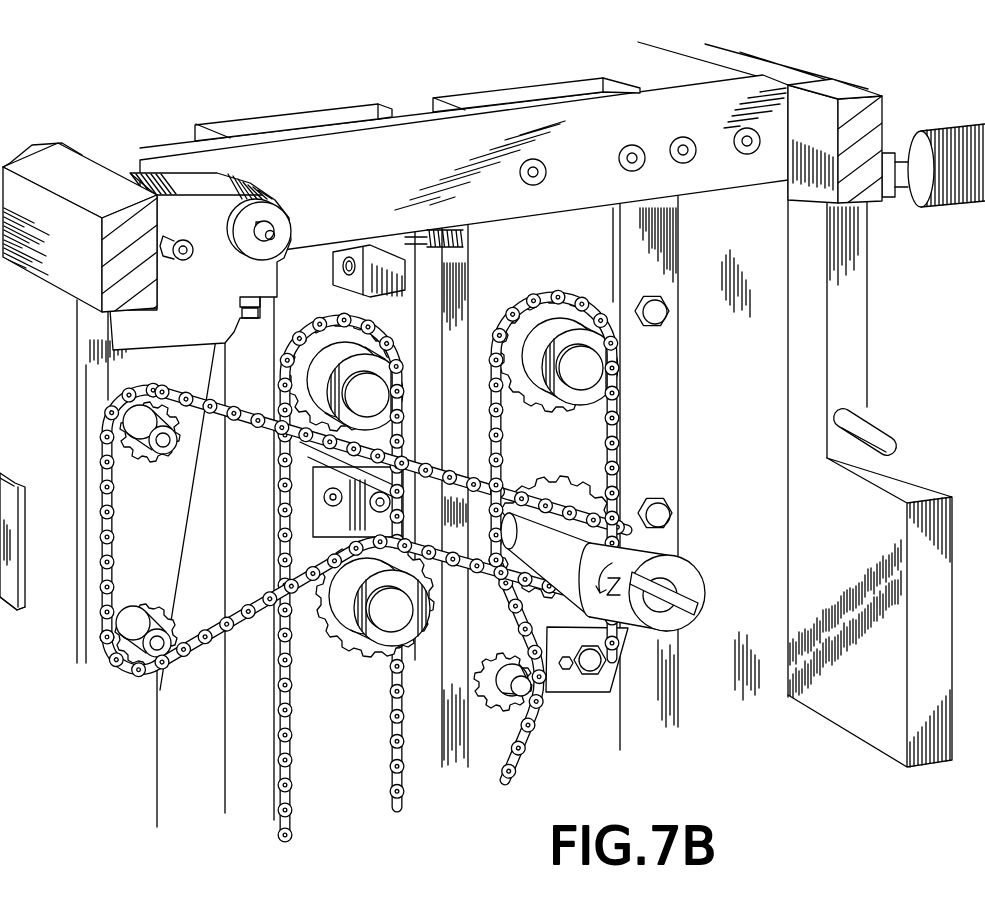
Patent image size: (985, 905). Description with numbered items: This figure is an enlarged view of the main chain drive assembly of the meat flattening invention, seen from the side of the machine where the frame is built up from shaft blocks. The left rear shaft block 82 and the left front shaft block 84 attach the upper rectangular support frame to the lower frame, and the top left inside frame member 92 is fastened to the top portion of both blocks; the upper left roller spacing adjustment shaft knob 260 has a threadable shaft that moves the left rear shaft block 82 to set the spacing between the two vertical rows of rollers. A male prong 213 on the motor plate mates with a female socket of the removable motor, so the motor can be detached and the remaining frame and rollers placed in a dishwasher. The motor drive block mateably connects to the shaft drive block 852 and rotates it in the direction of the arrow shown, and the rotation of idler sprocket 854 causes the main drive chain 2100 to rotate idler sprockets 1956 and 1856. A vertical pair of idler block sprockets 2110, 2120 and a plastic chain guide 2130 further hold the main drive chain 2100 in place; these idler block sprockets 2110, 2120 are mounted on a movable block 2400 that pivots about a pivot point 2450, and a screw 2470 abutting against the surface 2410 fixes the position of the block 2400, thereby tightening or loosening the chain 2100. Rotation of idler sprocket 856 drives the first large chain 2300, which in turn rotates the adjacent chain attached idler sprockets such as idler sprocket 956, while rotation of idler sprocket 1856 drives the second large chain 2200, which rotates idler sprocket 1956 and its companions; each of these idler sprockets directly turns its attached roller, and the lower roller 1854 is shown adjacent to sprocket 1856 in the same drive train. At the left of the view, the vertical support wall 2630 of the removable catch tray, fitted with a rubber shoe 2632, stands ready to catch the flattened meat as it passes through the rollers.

The left rear shaft block 82 is at (293, 118).
The top left inside frame member 92 is at (430, 140).
The left front shaft block 84 is at (537, 92).
The upper left roller spacing adjustment shaft knob 260 is at (962, 208).
The prong 213 is at (873, 430).
The movable block 2400 is at (113, 333).
The surface 2410 is at (250, 263).
The pivot point 2450 is at (181, 262).
The screw 2470 is at (240, 320).
The idler sprocket 1956 is at (398, 387).
The idler sprocket 956 is at (615, 362).
The second large chain 2200 is at (390, 760).
The first large chain 2300 is at (523, 757).
The lower roller 1854 is at (375, 648).
The idler sprocket 1856 is at (388, 645).
The idler sprocket 856 is at (545, 473).
The idler sprocket 854 is at (620, 512).
The shaft drive block 852 is at (694, 580).
The main drive chain 2100 is at (107, 463).
The idler block sprocket 2110 is at (152, 458).
The idler block sprocket 2120 is at (120, 667).
The plastic chain guide 2130 is at (313, 503).
The vertical support wall 2630 is at (32, 593).
The rubber shoe 2632 is at (17, 617).